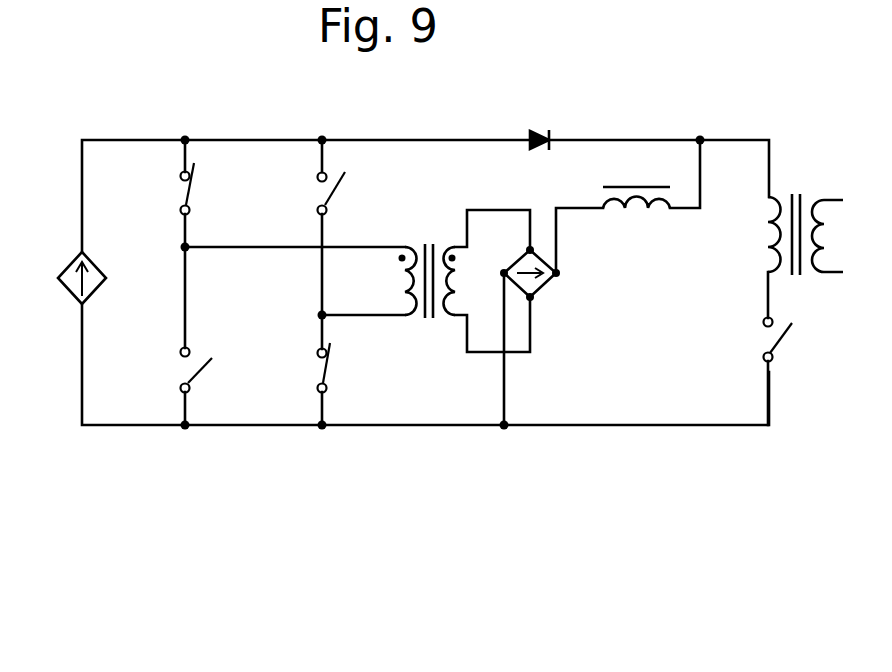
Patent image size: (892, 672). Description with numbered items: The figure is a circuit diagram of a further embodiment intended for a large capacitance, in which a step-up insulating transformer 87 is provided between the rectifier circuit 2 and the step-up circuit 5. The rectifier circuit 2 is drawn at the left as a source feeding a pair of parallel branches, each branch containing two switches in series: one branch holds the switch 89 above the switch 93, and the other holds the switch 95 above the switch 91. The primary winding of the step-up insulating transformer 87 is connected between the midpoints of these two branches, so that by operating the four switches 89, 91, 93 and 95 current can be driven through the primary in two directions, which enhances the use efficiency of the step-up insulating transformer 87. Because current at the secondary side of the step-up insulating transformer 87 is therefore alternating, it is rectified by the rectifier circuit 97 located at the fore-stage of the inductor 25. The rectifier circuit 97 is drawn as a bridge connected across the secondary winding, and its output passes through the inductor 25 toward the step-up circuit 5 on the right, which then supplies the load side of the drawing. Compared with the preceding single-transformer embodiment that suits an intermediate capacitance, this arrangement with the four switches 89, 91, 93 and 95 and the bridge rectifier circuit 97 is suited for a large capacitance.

The rectifier circuit 2 is at (58, 277).
The switch 89 is at (180, 208).
The switch 93 is at (182, 376).
The switch 95 is at (335, 200).
The switch 91 is at (318, 372).
The step-up insulating transformer 87 is at (418, 333).
The rectifier circuit 97 is at (540, 282).
The inductor 25 is at (657, 212).
The step-up circuit 5 is at (643, 172).